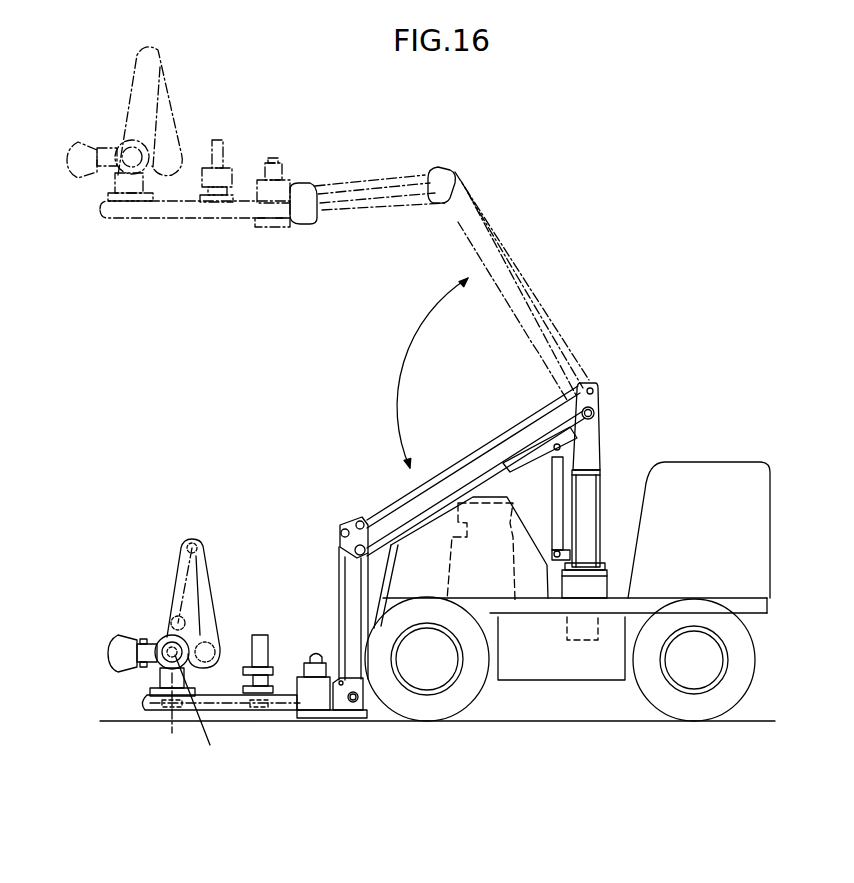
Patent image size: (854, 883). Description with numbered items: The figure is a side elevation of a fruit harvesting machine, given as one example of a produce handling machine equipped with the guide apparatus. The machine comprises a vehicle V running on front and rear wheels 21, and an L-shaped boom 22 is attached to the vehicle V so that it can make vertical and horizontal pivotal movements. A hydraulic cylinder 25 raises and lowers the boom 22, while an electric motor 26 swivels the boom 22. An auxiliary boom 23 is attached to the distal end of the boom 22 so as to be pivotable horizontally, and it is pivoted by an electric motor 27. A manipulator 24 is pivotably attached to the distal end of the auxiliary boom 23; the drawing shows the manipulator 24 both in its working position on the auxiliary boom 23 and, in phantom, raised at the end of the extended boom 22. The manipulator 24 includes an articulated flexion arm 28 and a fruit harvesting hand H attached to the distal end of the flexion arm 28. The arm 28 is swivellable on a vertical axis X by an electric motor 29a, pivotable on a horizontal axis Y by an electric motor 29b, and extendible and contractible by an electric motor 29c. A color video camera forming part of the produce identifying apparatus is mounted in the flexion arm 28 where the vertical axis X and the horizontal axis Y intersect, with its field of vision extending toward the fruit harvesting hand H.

The front and rear wheels 21 is at (425, 720).
The L-shaped boom 22 is at (392, 474).
The auxiliary boom 23 is at (283, 718).
The manipulator 24 is at (182, 62).
The hydraulic cylinder 25 is at (562, 462).
The electric motor 26 is at (572, 638).
The electric motor 27 is at (318, 690).
The articulated flexion arm 28 is at (210, 575).
The electric motor 29a is at (258, 634).
The electric motor 29b is at (165, 642).
The electric motor 29c is at (170, 612).
The fruit harvesting hand H is at (110, 645).
The vehicle V is at (694, 457).
The vertical axis X is at (172, 727).
The horizontal axis Y is at (198, 714).